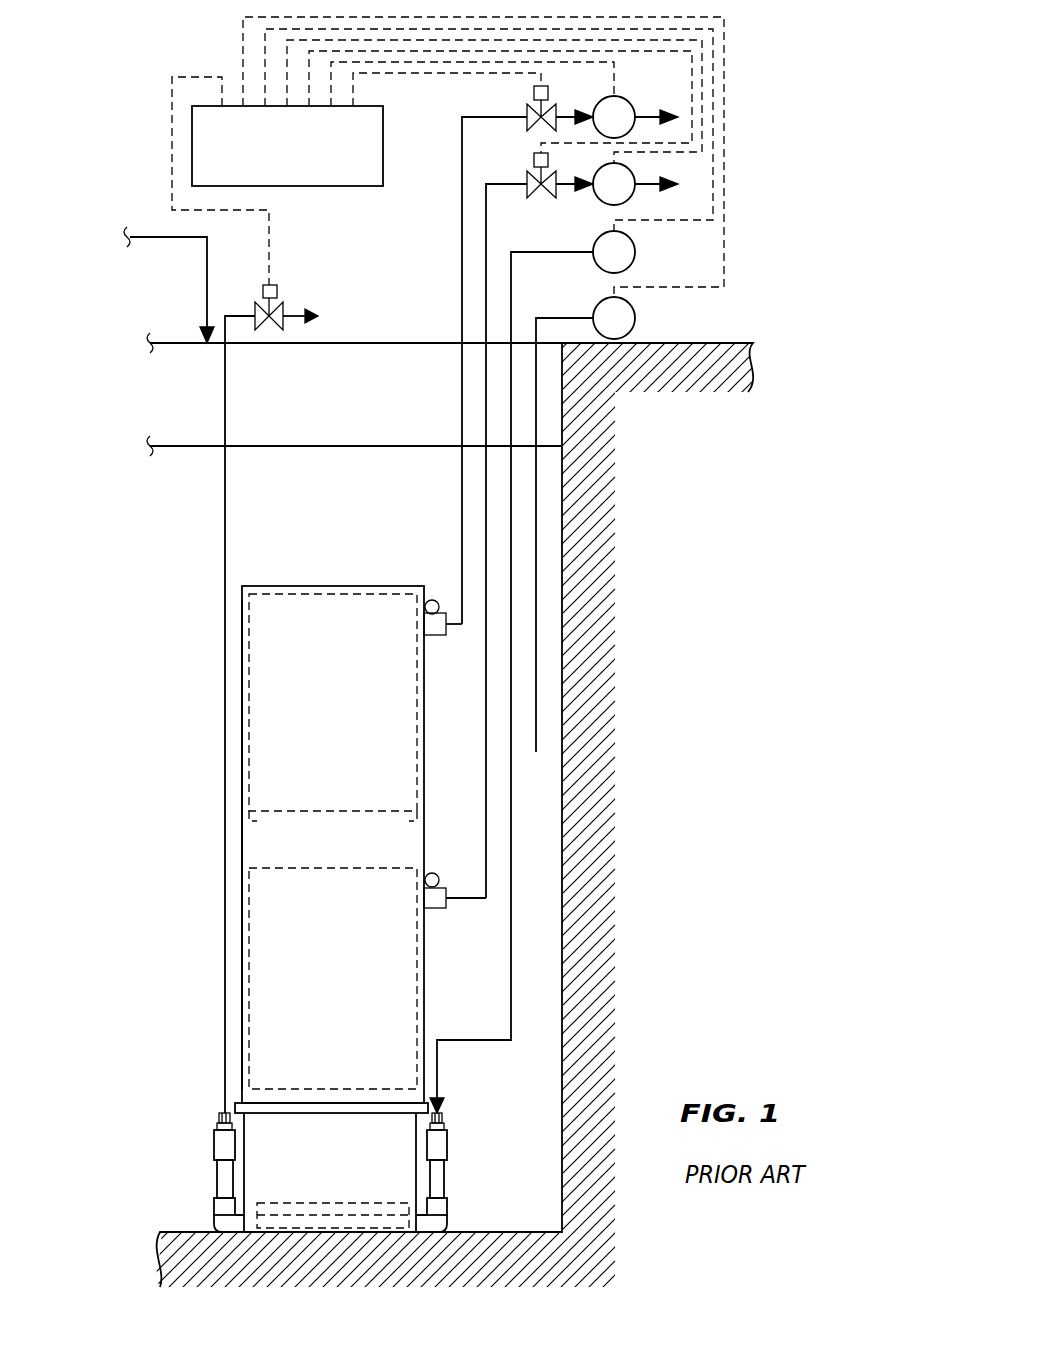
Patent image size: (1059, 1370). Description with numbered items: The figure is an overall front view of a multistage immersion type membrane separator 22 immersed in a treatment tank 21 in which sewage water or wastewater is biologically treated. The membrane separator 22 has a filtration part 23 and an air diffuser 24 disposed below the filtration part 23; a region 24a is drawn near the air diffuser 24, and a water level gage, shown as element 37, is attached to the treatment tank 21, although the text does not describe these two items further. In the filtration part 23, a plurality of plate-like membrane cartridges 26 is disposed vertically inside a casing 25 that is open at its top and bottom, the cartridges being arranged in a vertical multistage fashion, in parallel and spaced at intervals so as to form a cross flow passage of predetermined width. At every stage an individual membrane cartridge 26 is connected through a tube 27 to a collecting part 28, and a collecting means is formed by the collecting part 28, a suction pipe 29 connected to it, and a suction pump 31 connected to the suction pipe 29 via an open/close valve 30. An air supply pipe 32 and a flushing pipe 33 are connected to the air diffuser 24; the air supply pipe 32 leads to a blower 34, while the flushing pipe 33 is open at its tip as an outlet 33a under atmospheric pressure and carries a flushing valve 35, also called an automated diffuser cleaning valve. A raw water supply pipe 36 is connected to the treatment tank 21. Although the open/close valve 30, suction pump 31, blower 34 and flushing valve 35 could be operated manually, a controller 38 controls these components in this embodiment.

The treatment tank 21 is at (562, 797).
The multistage immersion type membrane separator 22 is at (326, 578).
The filtration part 23 is at (242, 833).
The air diffuser 24 is at (214, 1212).
The pump support region 24a is at (282, 1140).
The casing 25 is at (397, 835).
The membrane cartridge 26 is at (273, 590).
The tube 27 is at (437, 600).
The collecting part 28 is at (440, 637).
The suction pipe 29 is at (486, 502).
The open/close valve 30 is at (528, 180).
The suction pump 31 is at (637, 177).
The air supply pipe 32 is at (512, 415).
The flushing pipe 33 is at (225, 398).
The outlet 33a is at (313, 320).
The blower 34 is at (635, 241).
The flushing valve 35 is at (278, 302).
The raw water supply pipe 36 is at (207, 271).
The device 37 is at (636, 325).
The controller 38 is at (383, 163).